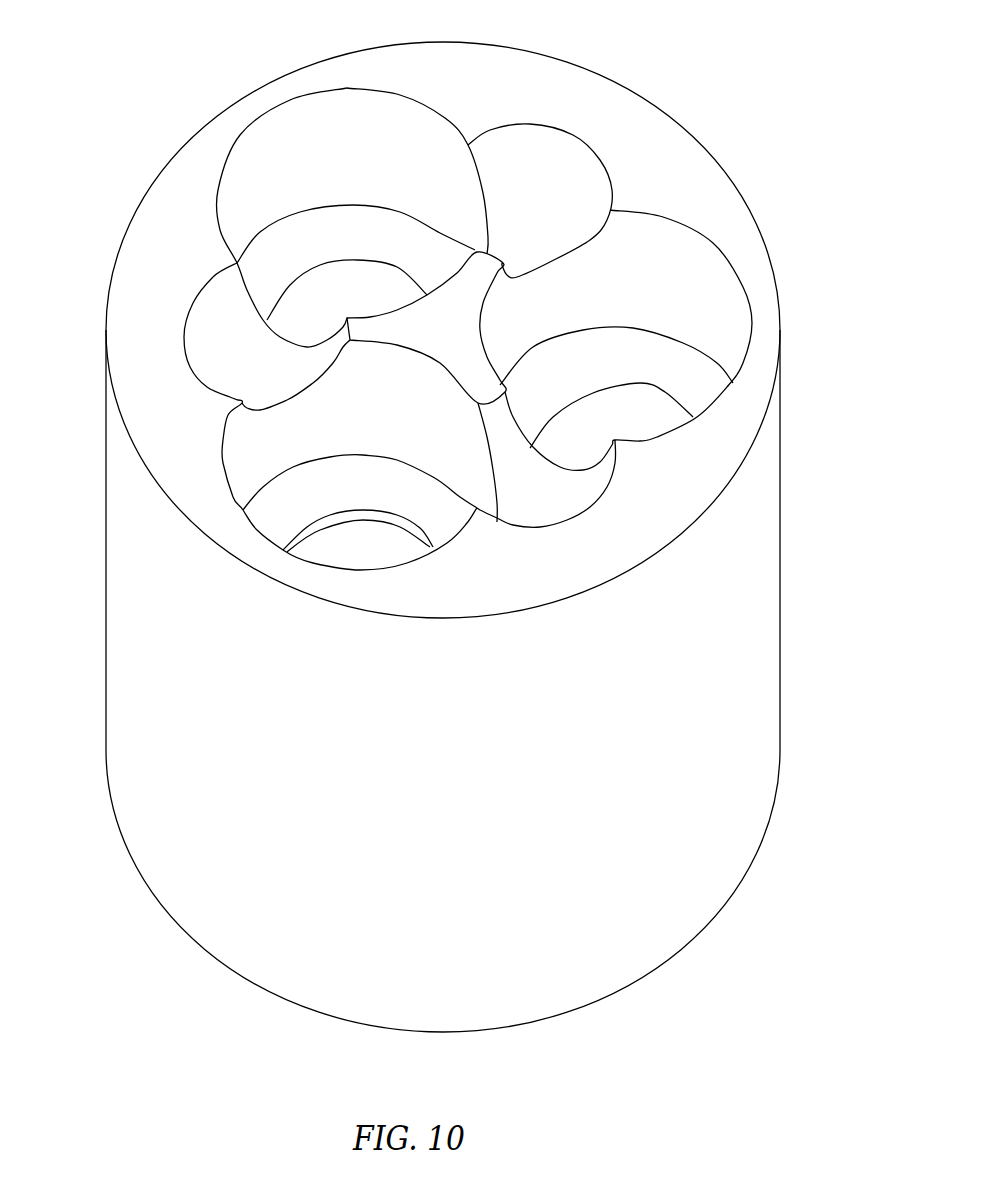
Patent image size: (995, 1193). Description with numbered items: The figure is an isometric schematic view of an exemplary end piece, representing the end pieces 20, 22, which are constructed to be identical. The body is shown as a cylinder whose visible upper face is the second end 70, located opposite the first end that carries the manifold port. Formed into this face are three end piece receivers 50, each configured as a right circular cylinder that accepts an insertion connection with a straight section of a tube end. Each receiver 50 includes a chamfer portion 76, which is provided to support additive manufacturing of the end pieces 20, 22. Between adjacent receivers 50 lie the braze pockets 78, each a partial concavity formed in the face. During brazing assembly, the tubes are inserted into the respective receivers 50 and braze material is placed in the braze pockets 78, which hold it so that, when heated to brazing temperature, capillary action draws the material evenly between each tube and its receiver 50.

The end piece 20 is at (408, 681).
The end piece 22 is at (408, 681).
The second end 70 is at (609, 95).
The end piece receiver 50 is at (364, 157).
The chamfer portion 76 is at (355, 247).
The braze pocket 78 is at (557, 208).